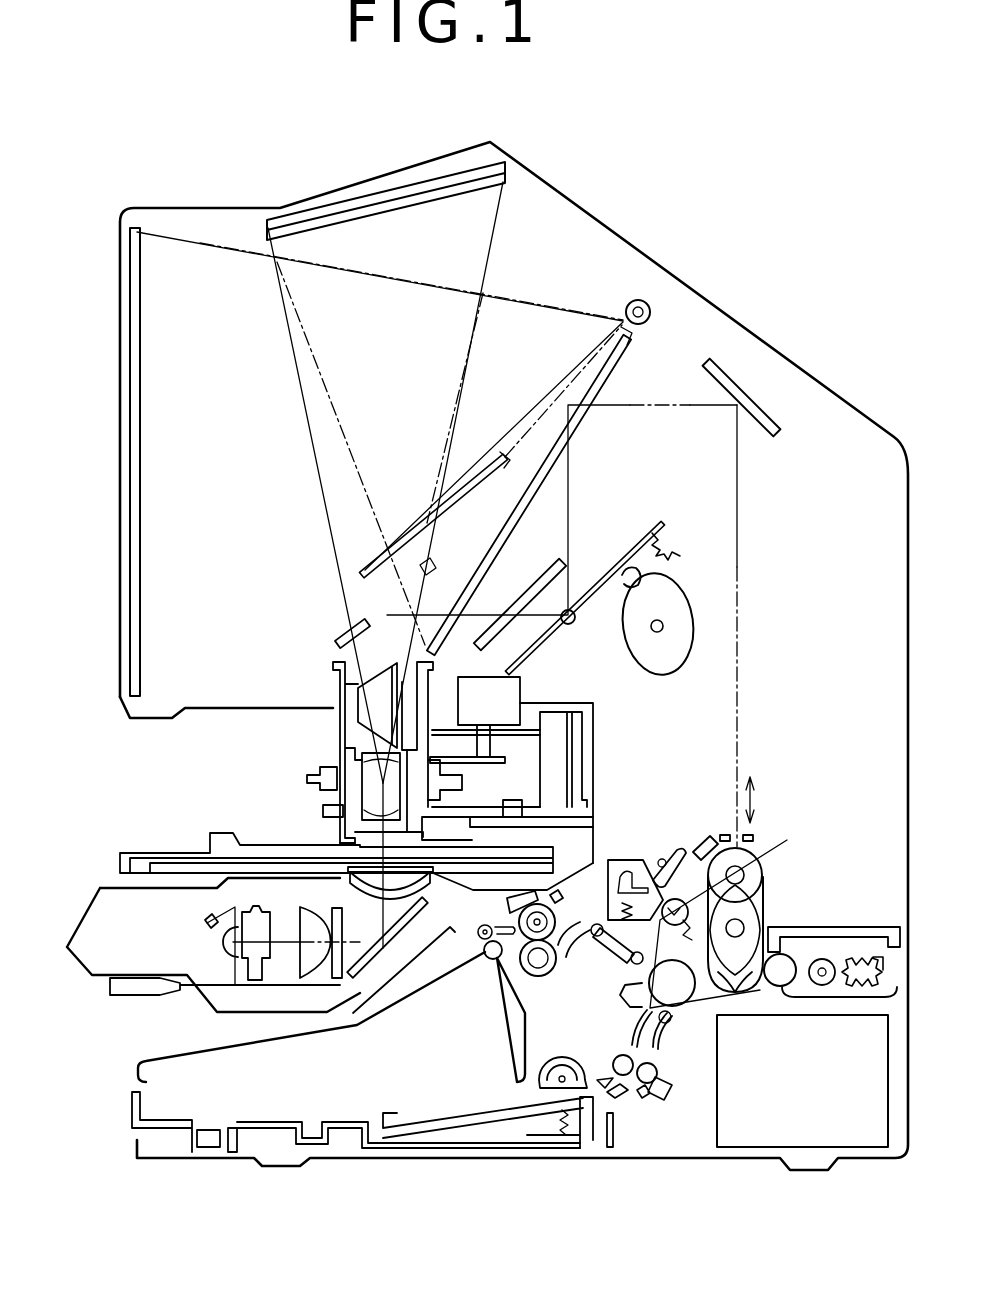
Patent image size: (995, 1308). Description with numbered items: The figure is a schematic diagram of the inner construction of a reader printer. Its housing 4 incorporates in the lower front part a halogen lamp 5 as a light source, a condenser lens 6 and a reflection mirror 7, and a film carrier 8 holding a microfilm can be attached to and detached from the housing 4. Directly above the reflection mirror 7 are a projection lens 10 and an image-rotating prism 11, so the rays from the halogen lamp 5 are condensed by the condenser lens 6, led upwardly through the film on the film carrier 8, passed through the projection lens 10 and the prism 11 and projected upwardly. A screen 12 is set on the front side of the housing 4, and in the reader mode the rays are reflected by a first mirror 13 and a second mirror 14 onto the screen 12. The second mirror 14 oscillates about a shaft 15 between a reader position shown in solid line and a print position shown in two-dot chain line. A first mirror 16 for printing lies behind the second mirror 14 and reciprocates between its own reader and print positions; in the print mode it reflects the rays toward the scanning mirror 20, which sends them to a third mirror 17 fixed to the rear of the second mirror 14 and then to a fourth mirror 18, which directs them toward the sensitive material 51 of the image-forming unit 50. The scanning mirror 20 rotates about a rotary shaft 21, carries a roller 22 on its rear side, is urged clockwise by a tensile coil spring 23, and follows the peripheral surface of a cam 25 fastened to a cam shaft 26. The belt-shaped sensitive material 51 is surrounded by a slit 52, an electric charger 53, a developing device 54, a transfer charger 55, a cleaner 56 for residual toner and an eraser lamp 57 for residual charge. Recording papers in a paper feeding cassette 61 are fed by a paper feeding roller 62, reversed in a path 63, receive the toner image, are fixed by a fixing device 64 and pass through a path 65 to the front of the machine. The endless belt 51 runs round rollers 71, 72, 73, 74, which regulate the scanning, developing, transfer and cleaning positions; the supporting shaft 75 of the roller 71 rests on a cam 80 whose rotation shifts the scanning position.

The housing 4 is at (708, 1160).
The halogen lamp 5 is at (227, 937).
The condenser lens 6 is at (307, 913).
The reflection mirror 7 is at (388, 950).
The film carrier 8 is at (255, 845).
The projection lens 10 is at (372, 777).
The image-rotating prism 11 is at (360, 703).
The screen 12 is at (143, 452).
The first mirror 13 is at (402, 208).
The second mirror 14 is at (482, 558).
The shaft 15 is at (630, 299).
The first mirror for printing 16 is at (345, 633).
The third mirror for the printer 17 is at (592, 420).
The fourth mirror for the print 18 is at (720, 368).
The scanning mirror 20 is at (612, 555).
The rotary shaft 21 is at (570, 628).
The roller 22 is at (615, 600).
The tensile coil spring 23 is at (670, 532).
The cam 25 is at (682, 636).
The cam shaft 26 is at (659, 634).
The image-forming unit 50 is at (767, 870).
The sensitive material 51 is at (790, 912).
The slit 52 is at (755, 833).
The electric charger 53 is at (698, 832).
The developing device 54 is at (870, 926).
The transfer charger 55 is at (620, 995).
The cleaner 56 is at (618, 858).
The eraser lamp 57 is at (664, 856).
The paper feeding cassette 61 is at (253, 1113).
The paper feeding roller 62 is at (550, 1070).
The path 63 is at (638, 1032).
The fixing device 64 is at (540, 970).
The path 65 is at (193, 1025).
The roller 71 is at (768, 888).
The roller 72 is at (747, 978).
The roller 73 is at (680, 1005).
The roller 74 is at (585, 948).
The supporting shaft 75 is at (768, 848).
The cam 80 is at (735, 992).